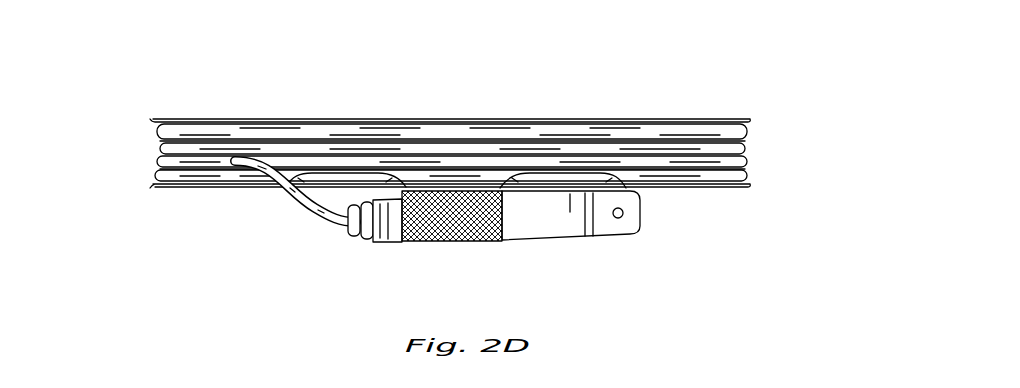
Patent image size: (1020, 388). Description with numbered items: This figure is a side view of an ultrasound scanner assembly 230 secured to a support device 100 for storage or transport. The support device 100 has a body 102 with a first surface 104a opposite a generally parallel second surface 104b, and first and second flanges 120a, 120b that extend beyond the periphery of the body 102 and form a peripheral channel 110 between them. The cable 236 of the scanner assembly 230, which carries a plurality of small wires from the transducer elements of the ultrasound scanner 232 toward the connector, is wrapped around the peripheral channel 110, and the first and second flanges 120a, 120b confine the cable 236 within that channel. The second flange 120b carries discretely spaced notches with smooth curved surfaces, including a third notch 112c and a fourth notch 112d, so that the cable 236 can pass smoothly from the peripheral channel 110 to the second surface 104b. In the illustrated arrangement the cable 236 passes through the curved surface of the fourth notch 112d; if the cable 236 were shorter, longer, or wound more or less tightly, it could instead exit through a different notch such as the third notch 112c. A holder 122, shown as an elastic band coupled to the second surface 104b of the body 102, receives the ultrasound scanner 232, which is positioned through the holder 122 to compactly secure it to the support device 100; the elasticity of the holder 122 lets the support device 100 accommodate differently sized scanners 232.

The support device 100 is at (733, 64).
The body 102 is at (683, 118).
The first surface 104a is at (206, 119).
The second surface 104b is at (215, 190).
The peripheral channel 110 is at (150, 147).
The third notch 112c is at (343, 178).
The fourth notch 112d is at (555, 175).
The first flange 120a is at (156, 123).
The second flange 120b is at (157, 182).
The holder 122 is at (452, 241).
The ultrasound scanner assembly 230 is at (124, 178).
The ultrasound scanner 232 is at (616, 238).
The cable 236 is at (747, 158).